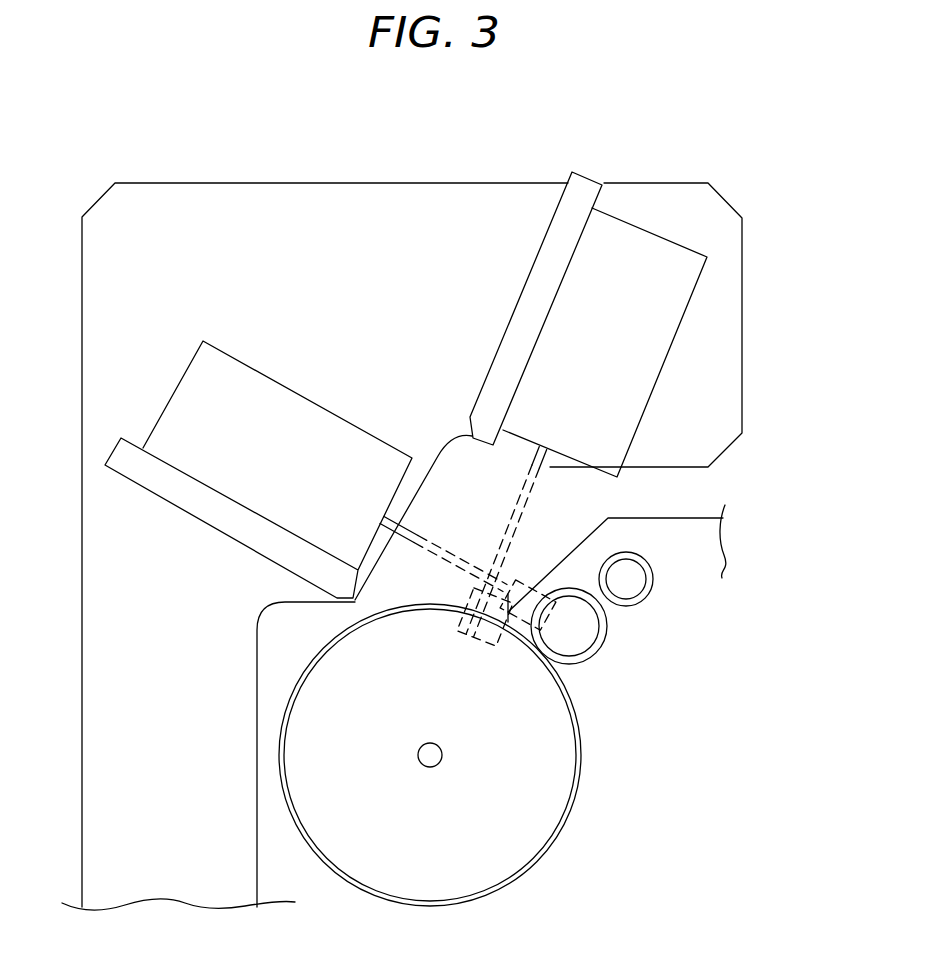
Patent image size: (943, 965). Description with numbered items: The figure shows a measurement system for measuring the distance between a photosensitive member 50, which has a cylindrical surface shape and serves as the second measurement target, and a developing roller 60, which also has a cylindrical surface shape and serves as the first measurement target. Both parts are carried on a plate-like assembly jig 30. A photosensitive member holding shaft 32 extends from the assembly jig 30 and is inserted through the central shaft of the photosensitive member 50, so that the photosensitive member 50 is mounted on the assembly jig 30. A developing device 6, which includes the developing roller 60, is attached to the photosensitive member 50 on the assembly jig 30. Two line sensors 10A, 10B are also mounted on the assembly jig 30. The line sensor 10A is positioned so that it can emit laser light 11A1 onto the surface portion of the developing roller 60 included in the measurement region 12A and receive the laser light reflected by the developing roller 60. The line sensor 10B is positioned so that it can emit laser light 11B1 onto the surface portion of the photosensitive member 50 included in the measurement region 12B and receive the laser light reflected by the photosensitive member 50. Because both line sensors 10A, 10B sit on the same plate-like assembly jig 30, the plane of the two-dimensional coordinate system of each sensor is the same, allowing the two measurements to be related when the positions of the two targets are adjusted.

The assembly jig 30 is at (734, 124).
The line sensor 10A is at (228, 354).
The line sensor 10B is at (692, 299).
The laser light 11A1 is at (420, 537).
The laser light 11B1 is at (548, 482).
The measurement region 12A is at (530, 580).
The measurement region 12B is at (466, 596).
The developing device 6 is at (692, 516).
The developing roller 60 is at (578, 635).
The photosensitive member 50 is at (283, 708).
The photosensitive member holding shaft 32 is at (440, 747).